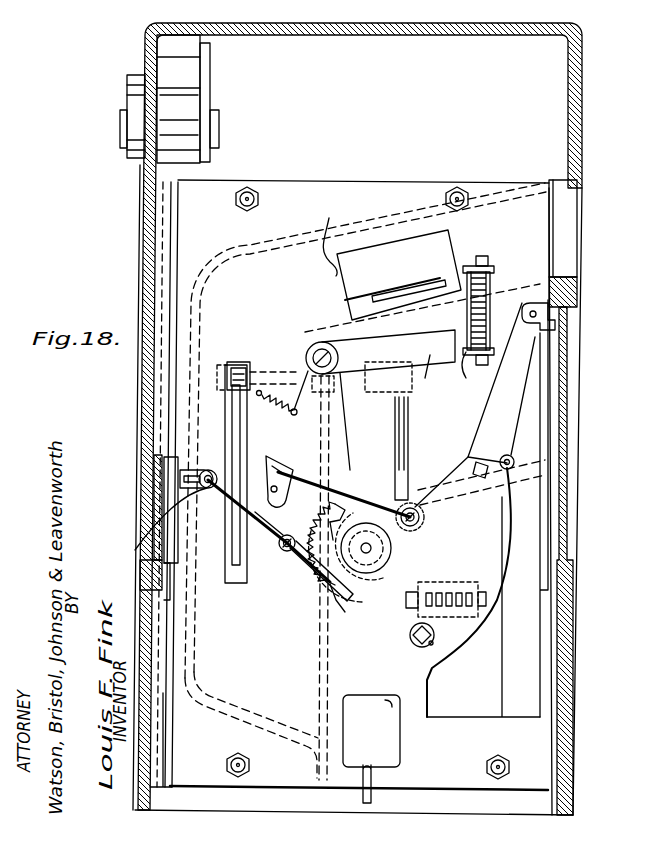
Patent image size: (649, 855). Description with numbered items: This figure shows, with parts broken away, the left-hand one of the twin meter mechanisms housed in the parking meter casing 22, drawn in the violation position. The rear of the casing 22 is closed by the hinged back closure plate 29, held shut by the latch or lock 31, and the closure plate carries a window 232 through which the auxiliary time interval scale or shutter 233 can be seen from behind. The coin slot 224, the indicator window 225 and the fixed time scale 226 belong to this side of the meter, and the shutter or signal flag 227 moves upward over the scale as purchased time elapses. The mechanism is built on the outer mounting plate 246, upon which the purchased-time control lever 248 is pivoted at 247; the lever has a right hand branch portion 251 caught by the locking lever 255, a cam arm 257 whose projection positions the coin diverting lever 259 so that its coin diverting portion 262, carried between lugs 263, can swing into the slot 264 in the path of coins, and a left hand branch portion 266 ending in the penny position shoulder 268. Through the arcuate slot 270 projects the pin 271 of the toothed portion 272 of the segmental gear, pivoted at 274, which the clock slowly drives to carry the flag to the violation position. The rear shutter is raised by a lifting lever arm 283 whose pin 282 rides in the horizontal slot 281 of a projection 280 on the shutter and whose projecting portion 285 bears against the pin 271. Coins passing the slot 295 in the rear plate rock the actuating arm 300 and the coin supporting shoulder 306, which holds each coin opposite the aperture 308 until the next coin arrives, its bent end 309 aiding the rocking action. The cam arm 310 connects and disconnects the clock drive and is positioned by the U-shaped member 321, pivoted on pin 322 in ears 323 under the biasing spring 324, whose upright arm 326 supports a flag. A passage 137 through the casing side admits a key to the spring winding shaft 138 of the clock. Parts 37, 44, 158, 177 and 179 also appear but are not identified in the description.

The parking meter casing 22 is at (584, 81).
The back closure plate 29 is at (142, 206).
The latch or lock 31 is at (131, 122).
The mounting plate 37 is at (170, 273).
The screws 44 is at (250, 190).
The passage 137 is at (431, 645).
The spring winding shaft 138 is at (432, 637).
The lever arm 158 is at (388, 345).
The lever 177 is at (548, 416).
The pivot 179 is at (515, 461).
The coin slot 224 is at (565, 236).
The indicator window 225 is at (567, 395).
The fixed time scale 226 is at (578, 292).
The shutter or signal flag 227 is at (545, 525).
The window 232 is at (170, 528).
The auxiliary time interval scale or shutter 233 is at (170, 503).
The outer mounting plate 246 is at (379, 188).
The pivot 247 is at (322, 344).
The purchased-time control lever 248 is at (353, 424).
The right hand branch portion 251 is at (268, 462).
The locking lever 255 is at (460, 490).
The cam arm 257 is at (407, 373).
The coin diverting lever 259 is at (493, 282).
The coin diverting portion 262 is at (482, 257).
The lugs 263 is at (480, 365).
The slot 264 is at (326, 241).
The left hand branch portion 266 is at (414, 524).
The penny position shoulder 268 is at (368, 549).
The arcuate slot 270 is at (315, 543).
The pin 271 is at (292, 605).
The toothed portion 272 is at (305, 600).
The pivot 274 is at (373, 549).
The projection 280 is at (180, 476).
The horizontal slot 281 is at (199, 480).
The pin 282 is at (145, 526).
The lifting lever arm 283 is at (268, 542).
The projecting portion 285 is at (350, 612).
The slot 295 is at (370, 292).
The actuating arm 300 is at (243, 414).
The coin supporting shoulder 306 is at (368, 745).
The aperture 308 is at (371, 719).
The end 309 is at (374, 800).
The cam arm 310 is at (410, 408).
The U-shaped member 321 is at (480, 622).
The pin 322 is at (398, 598).
The ears 323 is at (406, 610).
The biasing spring 324 is at (452, 592).
The upright arm 326 is at (512, 500).